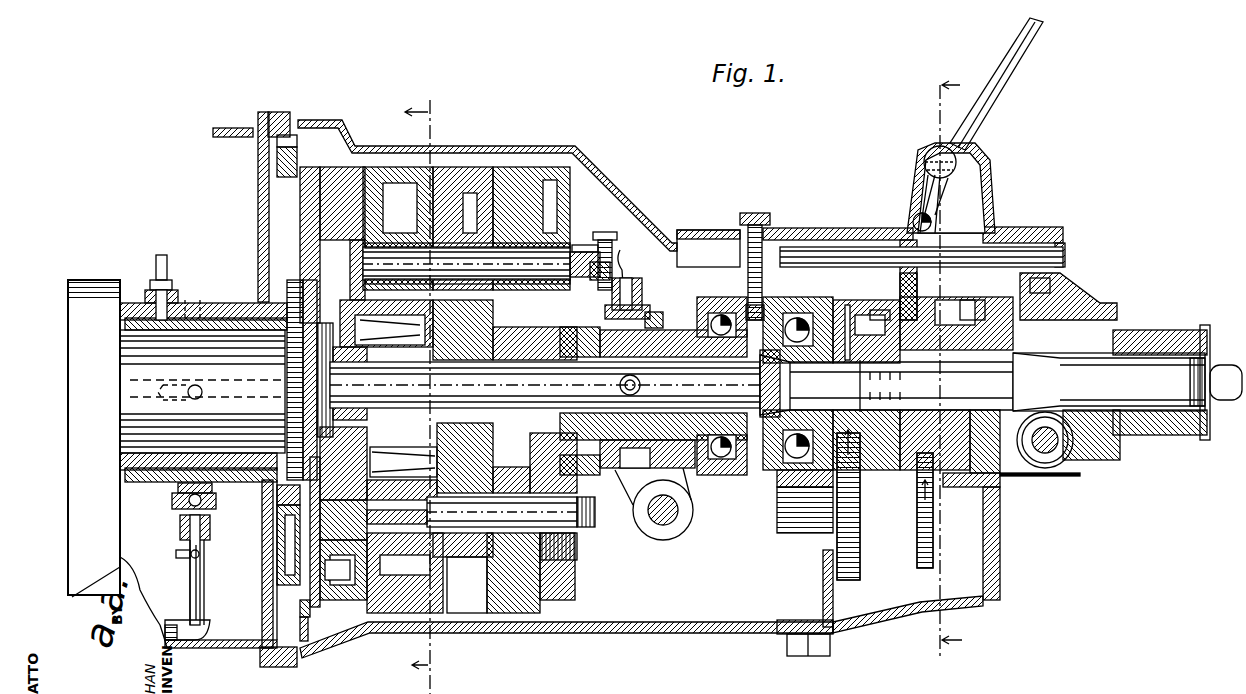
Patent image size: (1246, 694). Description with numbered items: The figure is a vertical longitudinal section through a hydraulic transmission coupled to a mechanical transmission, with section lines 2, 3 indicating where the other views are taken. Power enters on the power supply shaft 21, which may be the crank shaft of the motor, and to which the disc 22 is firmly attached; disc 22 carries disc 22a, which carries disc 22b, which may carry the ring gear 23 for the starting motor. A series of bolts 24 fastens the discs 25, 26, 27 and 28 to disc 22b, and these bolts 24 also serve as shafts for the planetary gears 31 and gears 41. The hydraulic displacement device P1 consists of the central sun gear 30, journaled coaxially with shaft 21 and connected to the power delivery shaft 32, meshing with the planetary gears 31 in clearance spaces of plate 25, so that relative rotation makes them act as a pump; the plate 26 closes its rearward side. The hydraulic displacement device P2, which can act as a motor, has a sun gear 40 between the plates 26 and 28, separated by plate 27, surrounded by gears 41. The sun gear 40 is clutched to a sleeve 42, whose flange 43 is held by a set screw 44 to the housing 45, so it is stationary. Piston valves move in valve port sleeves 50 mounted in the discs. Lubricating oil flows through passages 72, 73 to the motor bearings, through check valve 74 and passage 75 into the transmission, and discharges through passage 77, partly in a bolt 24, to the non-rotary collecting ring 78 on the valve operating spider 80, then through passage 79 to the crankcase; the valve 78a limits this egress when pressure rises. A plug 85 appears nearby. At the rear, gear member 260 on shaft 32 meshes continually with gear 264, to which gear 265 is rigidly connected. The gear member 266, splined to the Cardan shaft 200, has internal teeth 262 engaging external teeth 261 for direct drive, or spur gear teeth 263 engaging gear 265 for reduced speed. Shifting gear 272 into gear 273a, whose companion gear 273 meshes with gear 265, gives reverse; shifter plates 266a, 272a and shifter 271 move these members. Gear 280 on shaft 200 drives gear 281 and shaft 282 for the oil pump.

The section line 2- 2 is at (411, 397).
The section line 3- 3 is at (942, 369).
The power supply shaft 21 is at (177, 464).
The disc 22 is at (300, 480).
The disc 22a is at (292, 545).
The disc 22b is at (336, 672).
The ring gear 23 is at (277, 160).
The bolts 24 is at (590, 513).
The plate 25 is at (378, 152).
The plate 26 is at (453, 167).
The plate 27 is at (505, 167).
The plate 28 is at (543, 167).
The sun gear 30 is at (375, 345).
The planetary gears 31 is at (412, 613).
The power delivery shaft 32 is at (765, 383).
The sun gear 40 is at (500, 405).
The gears 41 is at (463, 573).
The sleeve 42 is at (688, 345).
The flange 43 is at (785, 305).
The set screw 44 is at (758, 213).
The housing 45 is at (700, 230).
The valve port sleeves 50 is at (578, 242).
The passage 72 is at (205, 590).
The passage 73 is at (180, 558).
The check valve 74 is at (216, 500).
The passage 75 is at (198, 390).
The passage 77 is at (625, 472).
The collecting ring 78 is at (628, 478).
The valve 78a is at (629, 269).
The passage 79 is at (638, 272).
The valve operating spider 80 is at (598, 252).
The plug 85 is at (157, 275).
The Cardan shaft 200 is at (1175, 412).
The gear member 260 is at (845, 303).
The external teeth 261 is at (922, 323).
The internal teeth 262 is at (852, 305).
The spur gear teeth 263 is at (878, 310).
The gear 264 is at (848, 581).
The gear 265 is at (925, 569).
The gear member 266 is at (915, 300).
The shifter plate 266a is at (912, 290).
The shifter 271 is at (1012, 80).
The gear 272 is at (1000, 470).
The shifter plate 272a is at (915, 318).
The gear 273 is at (1040, 470).
The gear 273a is at (960, 480).
The gear 280 is at (1062, 315).
The gear 281 is at (680, 340).
The shaft 282 is at (1065, 458).
The hydraulic displacement device P1 is at (390, 613).
The hydraulic displacement device P2 is at (577, 548).